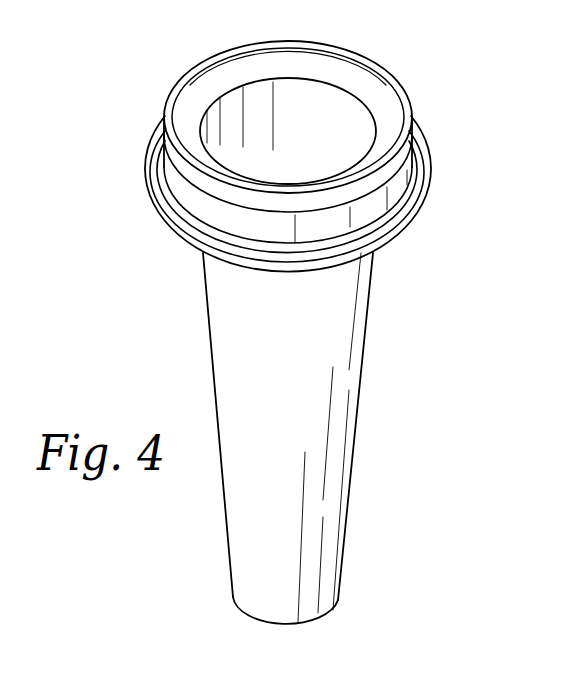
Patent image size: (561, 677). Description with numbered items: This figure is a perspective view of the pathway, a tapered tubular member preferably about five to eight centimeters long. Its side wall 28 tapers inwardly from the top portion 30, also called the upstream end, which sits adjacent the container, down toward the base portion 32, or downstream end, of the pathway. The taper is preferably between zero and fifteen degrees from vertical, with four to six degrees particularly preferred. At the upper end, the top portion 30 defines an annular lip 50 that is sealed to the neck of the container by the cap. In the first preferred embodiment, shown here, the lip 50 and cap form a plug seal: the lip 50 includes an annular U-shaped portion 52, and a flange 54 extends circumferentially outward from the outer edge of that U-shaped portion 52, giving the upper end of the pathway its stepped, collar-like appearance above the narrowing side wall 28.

The side wall 28 is at (340, 385).
The top portion 30 is at (299, 123).
The base portion 32 is at (348, 622).
The annular lip 50 is at (191, 66).
The annular U-shaped portion 52 is at (295, 55).
The flange 54 is at (421, 196).